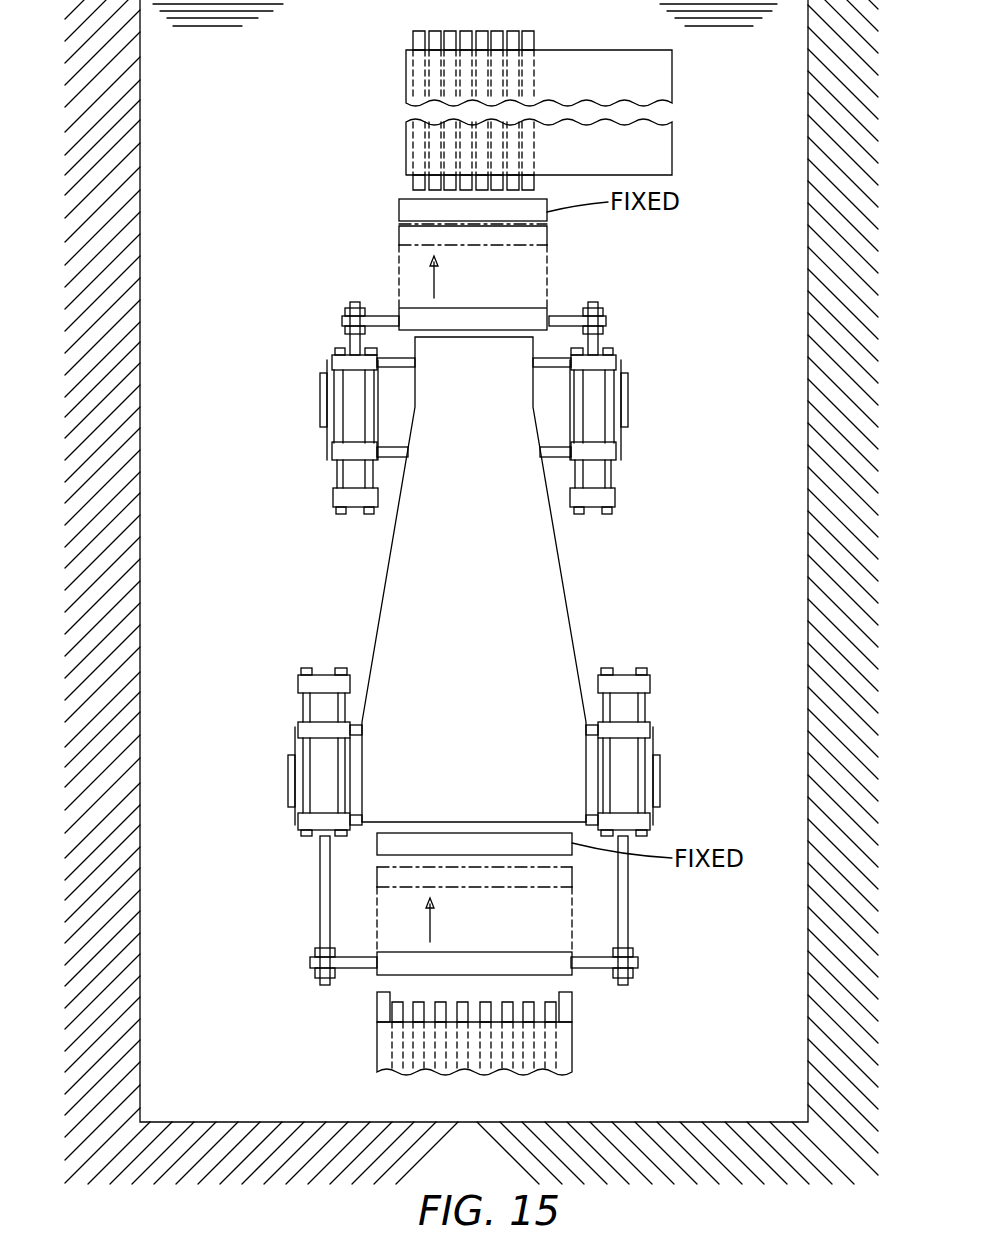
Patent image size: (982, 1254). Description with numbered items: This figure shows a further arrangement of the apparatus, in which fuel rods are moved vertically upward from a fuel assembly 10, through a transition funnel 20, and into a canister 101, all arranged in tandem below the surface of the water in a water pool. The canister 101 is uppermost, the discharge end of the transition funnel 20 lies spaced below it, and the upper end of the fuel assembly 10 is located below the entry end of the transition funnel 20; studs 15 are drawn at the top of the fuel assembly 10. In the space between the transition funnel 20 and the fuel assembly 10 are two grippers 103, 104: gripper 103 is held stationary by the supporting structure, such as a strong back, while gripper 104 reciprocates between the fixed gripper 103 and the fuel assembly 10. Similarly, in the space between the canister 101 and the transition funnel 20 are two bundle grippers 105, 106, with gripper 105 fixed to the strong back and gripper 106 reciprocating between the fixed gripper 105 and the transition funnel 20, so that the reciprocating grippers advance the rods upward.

The fuel assembly 10 is at (572, 1040).
The stud bolts 15 is at (465, 1002).
The transition funnel 20 is at (566, 600).
The canister 101 is at (672, 84).
The gripper 103 is at (572, 846).
The gripper 104 is at (652, 924).
The bundle gripper 105 is at (547, 214).
The bundle gripper 106 is at (575, 267).